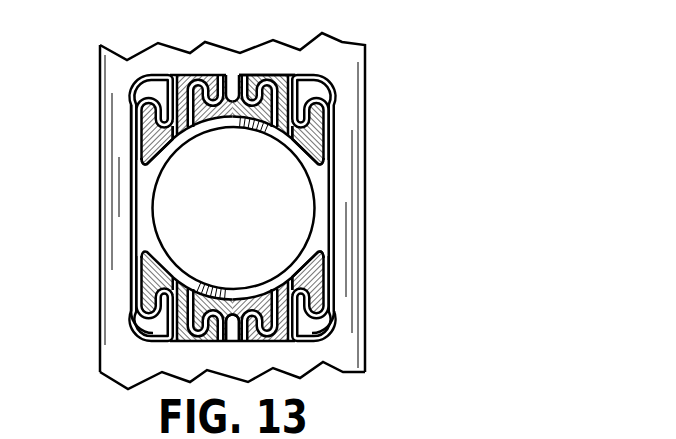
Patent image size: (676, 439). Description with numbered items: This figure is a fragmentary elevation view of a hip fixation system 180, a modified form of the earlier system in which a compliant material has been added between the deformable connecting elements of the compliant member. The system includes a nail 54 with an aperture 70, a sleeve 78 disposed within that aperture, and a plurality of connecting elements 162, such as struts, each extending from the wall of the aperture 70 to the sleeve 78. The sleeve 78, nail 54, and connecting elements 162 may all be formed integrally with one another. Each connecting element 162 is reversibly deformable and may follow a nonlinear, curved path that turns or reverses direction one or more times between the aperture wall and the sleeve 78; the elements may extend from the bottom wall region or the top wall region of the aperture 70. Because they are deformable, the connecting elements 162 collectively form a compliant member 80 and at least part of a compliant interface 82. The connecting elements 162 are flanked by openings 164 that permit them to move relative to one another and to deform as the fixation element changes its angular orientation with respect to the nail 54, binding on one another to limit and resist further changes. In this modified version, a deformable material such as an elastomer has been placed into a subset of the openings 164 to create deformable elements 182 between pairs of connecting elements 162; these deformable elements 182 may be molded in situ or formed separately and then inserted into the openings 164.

The nail 54 is at (97, 128).
The aperture 70 is at (312, 337).
The sleeve 78 is at (320, 153).
The compliant member 80 is at (131, 313).
The compliant interface 82 is at (138, 344).
The connecting element 162 is at (312, 101).
The opening 164 is at (132, 212).
The hip fixation system 180 is at (388, 74).
The deformable element 182 is at (158, 133).